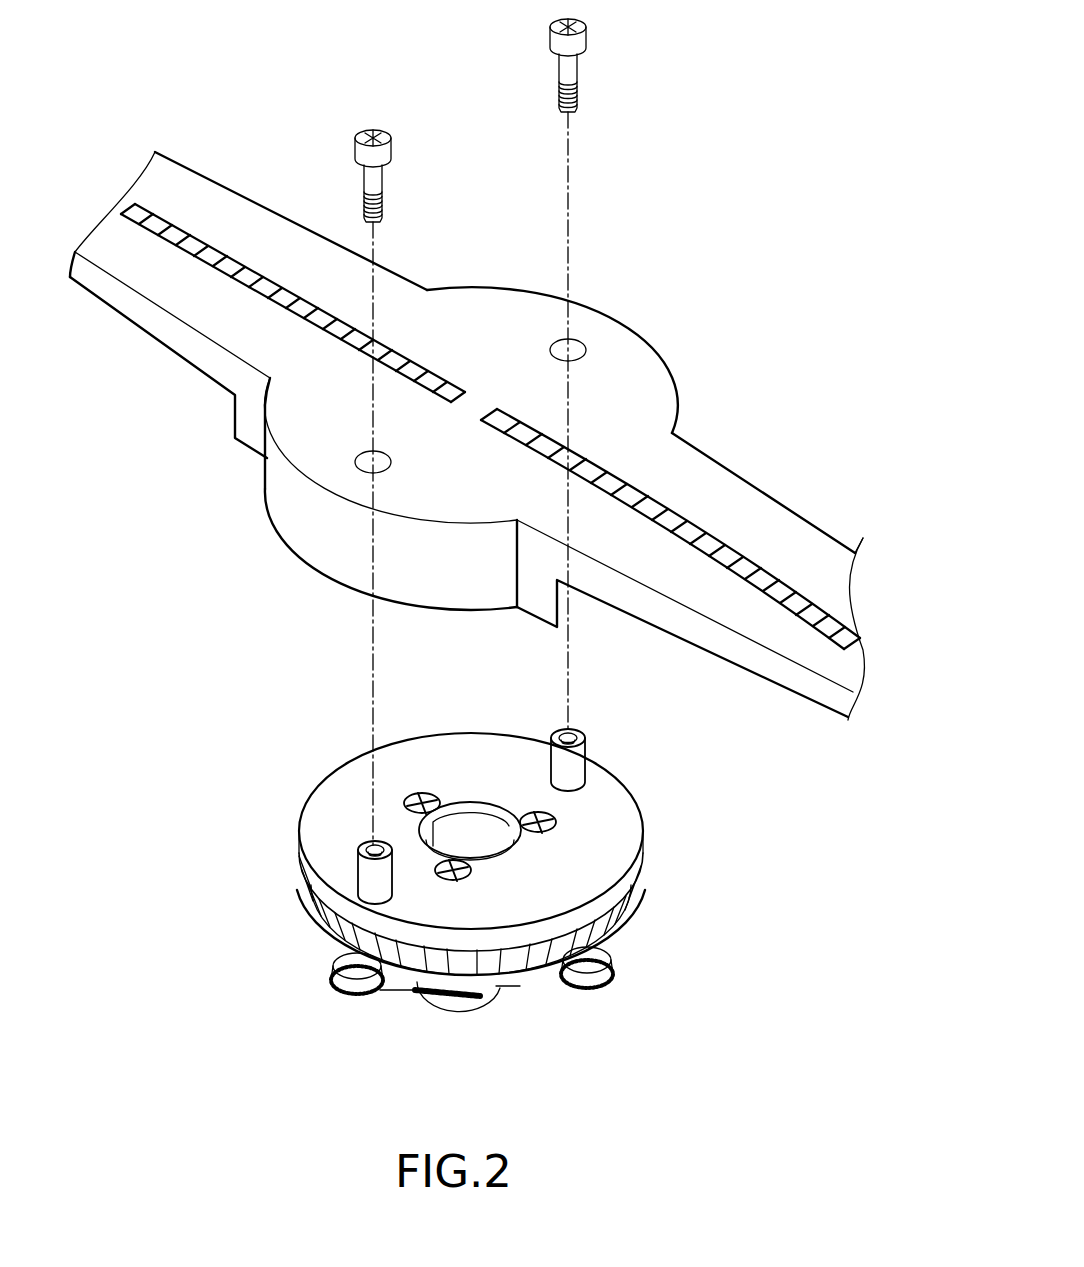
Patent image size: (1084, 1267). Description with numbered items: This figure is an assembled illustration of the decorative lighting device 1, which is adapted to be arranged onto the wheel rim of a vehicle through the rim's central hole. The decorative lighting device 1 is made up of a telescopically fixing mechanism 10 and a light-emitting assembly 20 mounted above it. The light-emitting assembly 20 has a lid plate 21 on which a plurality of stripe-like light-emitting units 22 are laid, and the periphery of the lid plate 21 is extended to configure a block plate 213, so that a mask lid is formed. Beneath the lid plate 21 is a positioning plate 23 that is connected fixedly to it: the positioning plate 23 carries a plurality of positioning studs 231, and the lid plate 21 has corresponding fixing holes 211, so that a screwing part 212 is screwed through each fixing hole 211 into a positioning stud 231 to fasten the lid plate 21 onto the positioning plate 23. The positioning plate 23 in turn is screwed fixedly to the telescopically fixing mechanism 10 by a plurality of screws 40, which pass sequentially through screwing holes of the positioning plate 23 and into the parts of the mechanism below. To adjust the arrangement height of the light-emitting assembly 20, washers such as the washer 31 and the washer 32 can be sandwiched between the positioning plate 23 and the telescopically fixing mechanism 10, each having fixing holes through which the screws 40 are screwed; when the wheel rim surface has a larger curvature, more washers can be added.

The decorative lighting device 1 is at (384, 44).
The light-emitting assembly 20 is at (472, 252).
The lid plate 21 is at (638, 392).
The fixing holes 211 is at (575, 348).
The screwing part 212 is at (570, 72).
The block plate 213 is at (305, 538).
The light-emitting units 22 is at (700, 537).
The telescopically fixing mechanism 10 is at (627, 995).
The positioning plate 23 is at (608, 840).
The positioning studs 231 is at (585, 735).
The screws 40 is at (552, 810).
The washer 32 is at (637, 928).
The washer 31 is at (527, 952).